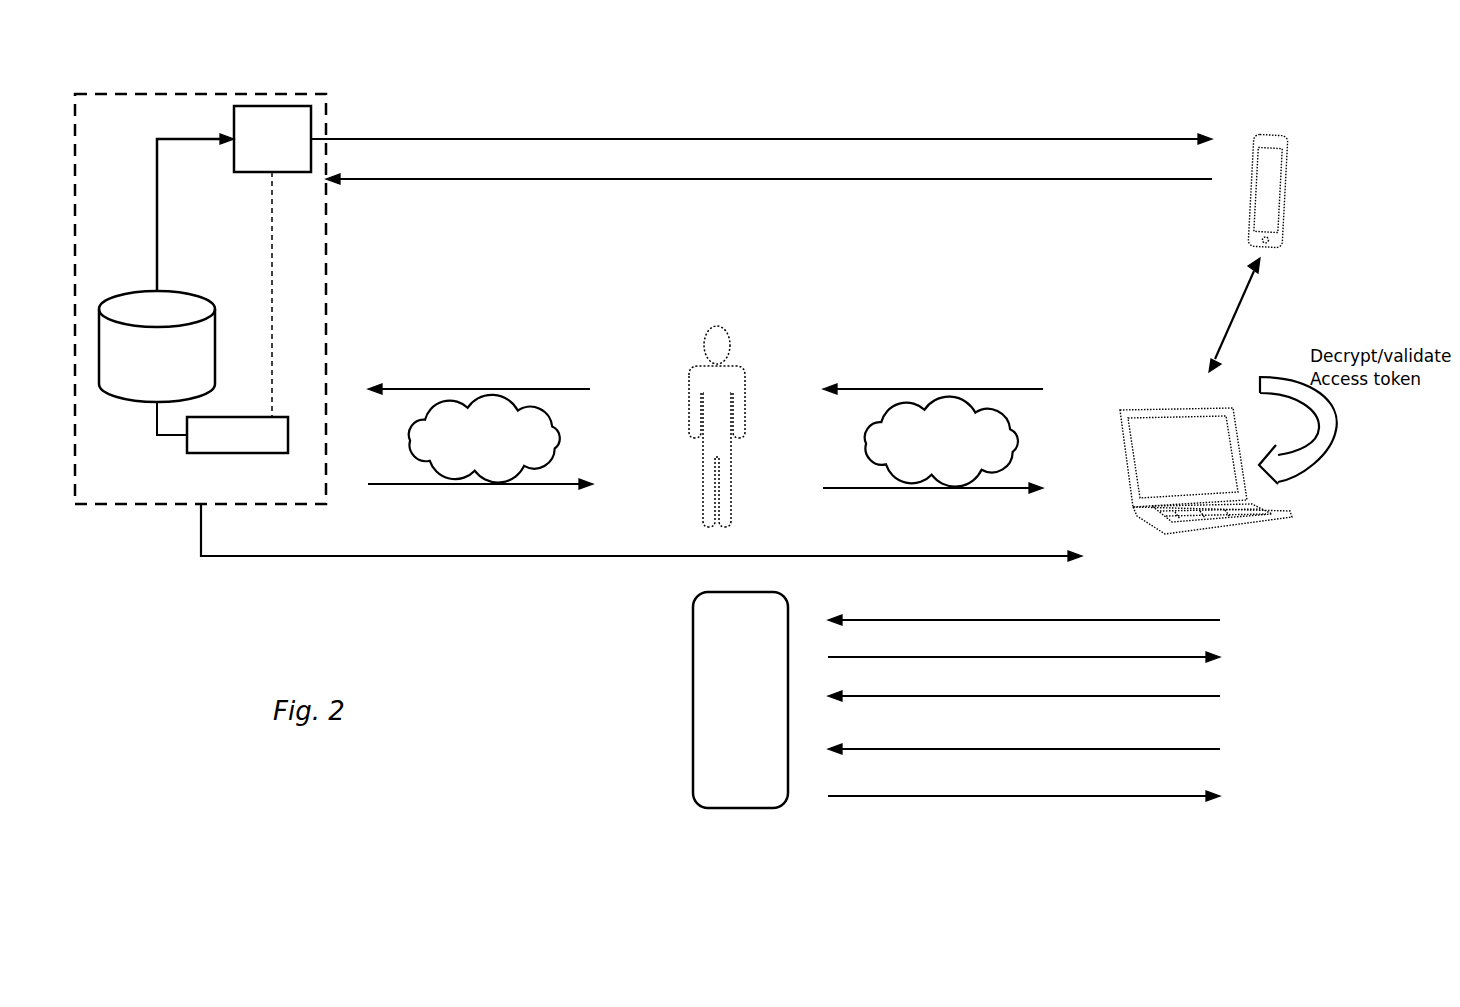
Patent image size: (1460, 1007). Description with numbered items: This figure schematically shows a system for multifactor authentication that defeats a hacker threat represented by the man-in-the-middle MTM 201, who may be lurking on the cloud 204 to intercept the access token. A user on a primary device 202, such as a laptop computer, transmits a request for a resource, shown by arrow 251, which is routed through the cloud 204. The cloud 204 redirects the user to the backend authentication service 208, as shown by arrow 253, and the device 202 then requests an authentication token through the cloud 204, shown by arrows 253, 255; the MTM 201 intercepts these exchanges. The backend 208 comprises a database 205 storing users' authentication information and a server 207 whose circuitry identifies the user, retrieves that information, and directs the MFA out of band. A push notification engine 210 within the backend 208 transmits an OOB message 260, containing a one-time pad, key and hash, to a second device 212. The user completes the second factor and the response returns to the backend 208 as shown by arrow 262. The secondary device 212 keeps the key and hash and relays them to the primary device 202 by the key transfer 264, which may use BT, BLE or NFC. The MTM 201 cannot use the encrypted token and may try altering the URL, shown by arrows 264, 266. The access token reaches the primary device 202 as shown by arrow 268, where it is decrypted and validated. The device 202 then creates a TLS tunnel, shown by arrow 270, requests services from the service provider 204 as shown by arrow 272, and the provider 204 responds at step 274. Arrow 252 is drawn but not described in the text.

The man-in-the-middle (MTM) 201 is at (717, 414).
The primary device 202 is at (1265, 520).
The cloud 204 is at (713, 601).
The database 205 is at (157, 346).
The server 207 is at (237, 435).
The backend authentication service 208 is at (108, 506).
The push notification service 210 is at (272, 139).
The second device 212 is at (1287, 190).
The request resource arrow 251 is at (1024, 609).
The response message 252 is at (1024, 647).
The redirect arrow 253 is at (933, 378).
The authentication token request arrow 255 is at (479, 378).
The OOB message 260 is at (761, 129).
The second factor response arrow 262 is at (769, 170).
The key transfer 264 is at (823, 388).
The URL alteration arrow 266 is at (933, 498).
The access token delivery arrow 268 is at (641, 532).
The TLS tunnel arrow 270 is at (1024, 687).
The service request arrow 272 is at (1024, 737).
The service response step 274 is at (1024, 784).